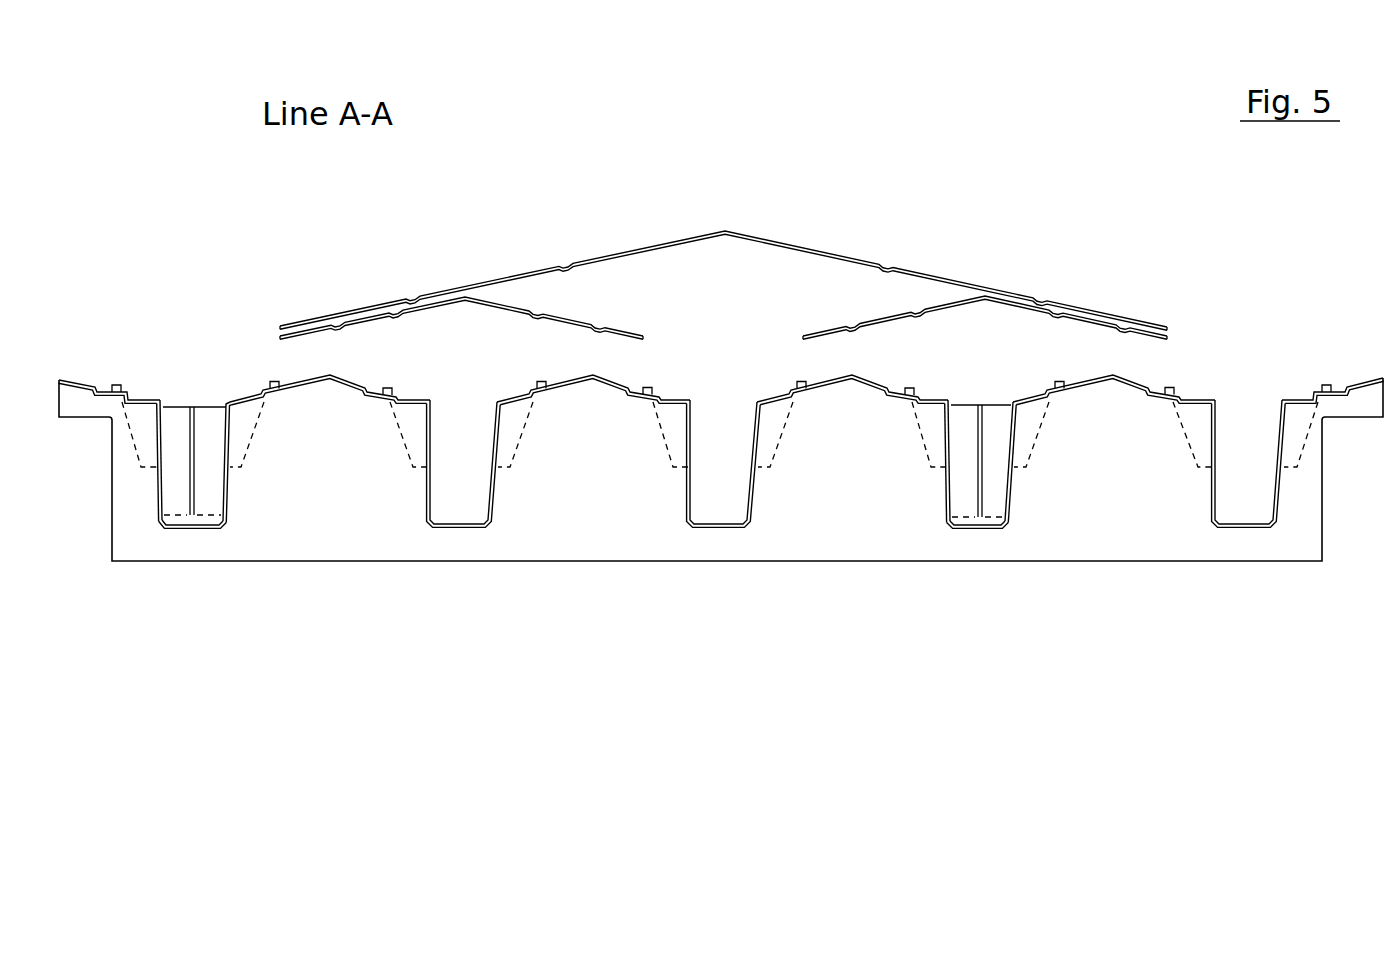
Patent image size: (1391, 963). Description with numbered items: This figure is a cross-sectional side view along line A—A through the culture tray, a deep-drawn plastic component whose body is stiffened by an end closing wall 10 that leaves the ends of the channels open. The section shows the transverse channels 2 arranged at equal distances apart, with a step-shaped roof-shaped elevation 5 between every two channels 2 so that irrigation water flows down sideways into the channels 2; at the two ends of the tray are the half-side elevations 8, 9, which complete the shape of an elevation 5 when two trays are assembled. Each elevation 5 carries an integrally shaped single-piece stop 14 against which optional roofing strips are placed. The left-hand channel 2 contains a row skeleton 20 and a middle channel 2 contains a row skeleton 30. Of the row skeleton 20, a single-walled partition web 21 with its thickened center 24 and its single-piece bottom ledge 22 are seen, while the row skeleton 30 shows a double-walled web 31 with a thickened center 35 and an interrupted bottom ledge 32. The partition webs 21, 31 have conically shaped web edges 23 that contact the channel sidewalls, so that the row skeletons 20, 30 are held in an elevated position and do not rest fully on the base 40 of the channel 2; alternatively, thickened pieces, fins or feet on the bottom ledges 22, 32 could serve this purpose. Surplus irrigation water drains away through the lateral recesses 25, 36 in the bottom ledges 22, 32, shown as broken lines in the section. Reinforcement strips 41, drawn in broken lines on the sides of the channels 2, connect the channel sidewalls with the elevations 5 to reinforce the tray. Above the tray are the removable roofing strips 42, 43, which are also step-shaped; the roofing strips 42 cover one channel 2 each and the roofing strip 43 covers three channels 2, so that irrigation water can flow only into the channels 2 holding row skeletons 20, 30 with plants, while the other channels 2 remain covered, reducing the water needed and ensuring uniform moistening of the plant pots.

The transverse channel 2 is at (435, 498).
The roof-shaped elevation 5 is at (354, 377).
The half-side elevation 8 is at (93, 380).
The half-side elevation 9 is at (1360, 378).
The end closing wall 10 is at (853, 533).
The stop 14 is at (1322, 388).
The row skeleton 20 is at (223, 500).
The partition web 21 is at (172, 463).
The bottom ledge 22 is at (205, 487).
The web edge 23 is at (220, 470).
The thickened center 24 is at (195, 420).
The lateral recess 25 is at (163, 523).
The row skeleton 30 is at (965, 502).
The web 31 is at (993, 467).
The bottom ledge 32 is at (977, 468).
The thickened center 35 is at (1013, 502).
The rectangular recess 36 is at (960, 522).
The base of channel 40 is at (188, 525).
The reinforcement strip 41 is at (1195, 432).
The roofing strip 42 is at (627, 332).
The roofing strip 43 is at (852, 253).